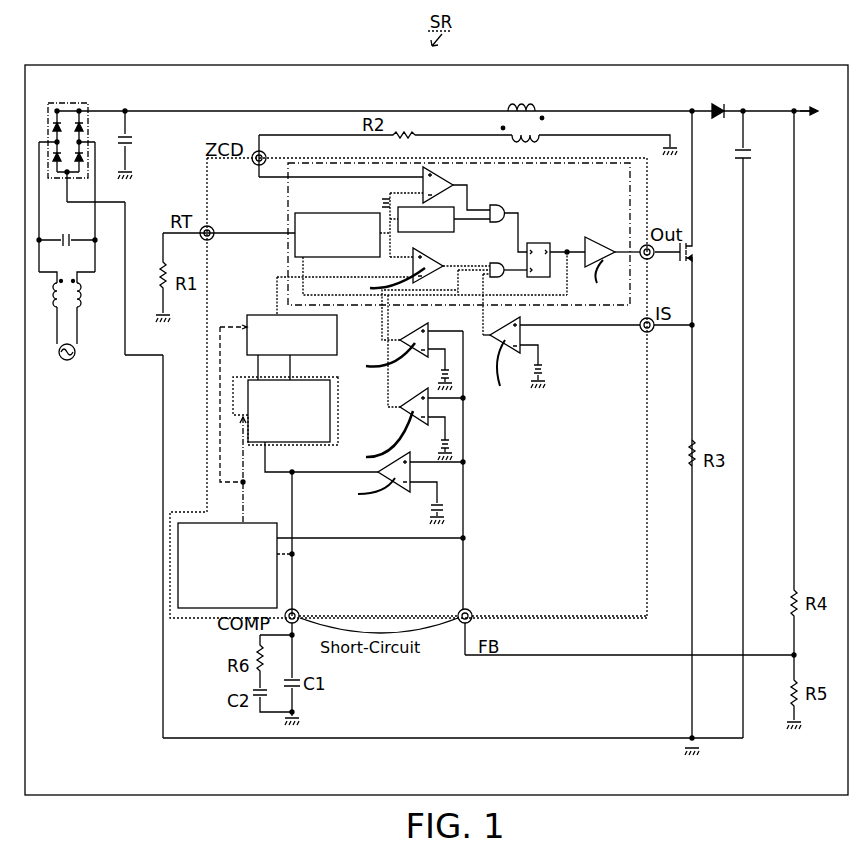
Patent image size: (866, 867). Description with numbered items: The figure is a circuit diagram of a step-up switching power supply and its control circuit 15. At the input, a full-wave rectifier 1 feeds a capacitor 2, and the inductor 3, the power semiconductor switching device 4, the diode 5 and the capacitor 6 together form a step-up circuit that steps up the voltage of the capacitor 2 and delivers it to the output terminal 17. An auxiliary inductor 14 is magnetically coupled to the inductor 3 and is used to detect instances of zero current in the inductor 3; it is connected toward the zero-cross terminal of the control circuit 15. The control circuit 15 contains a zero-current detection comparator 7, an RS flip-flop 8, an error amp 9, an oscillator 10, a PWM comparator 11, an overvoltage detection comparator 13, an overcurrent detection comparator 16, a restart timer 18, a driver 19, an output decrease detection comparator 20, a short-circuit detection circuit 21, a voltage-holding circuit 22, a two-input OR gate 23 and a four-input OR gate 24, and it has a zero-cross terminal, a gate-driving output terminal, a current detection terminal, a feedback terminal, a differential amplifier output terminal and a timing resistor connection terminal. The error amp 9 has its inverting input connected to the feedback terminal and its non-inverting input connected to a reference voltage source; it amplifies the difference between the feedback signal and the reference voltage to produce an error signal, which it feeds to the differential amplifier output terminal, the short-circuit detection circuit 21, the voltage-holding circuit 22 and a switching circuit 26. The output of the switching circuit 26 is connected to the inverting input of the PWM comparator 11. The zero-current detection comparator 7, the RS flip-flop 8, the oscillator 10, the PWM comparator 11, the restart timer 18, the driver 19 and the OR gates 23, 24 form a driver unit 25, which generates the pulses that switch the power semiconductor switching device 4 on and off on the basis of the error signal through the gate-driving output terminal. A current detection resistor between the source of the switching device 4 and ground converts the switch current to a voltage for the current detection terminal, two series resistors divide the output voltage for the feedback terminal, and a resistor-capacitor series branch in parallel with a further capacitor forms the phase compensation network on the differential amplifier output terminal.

The full-wave rectifier 1 is at (62, 104).
The capacitor 2 is at (139, 141).
The inductor 3 is at (516, 105).
The power semiconductor switching device 4 is at (697, 252).
The diode 5 is at (717, 101).
The capacitor 6 is at (752, 150).
The zero-current detection comparator 7 is at (446, 186).
The RS flip-flop 8 is at (540, 243).
The error amp 9 is at (385, 468).
The oscillator 10 is at (333, 213).
The PWM comparator 11 is at (425, 262).
The overvoltage detection comparator 13 is at (403, 337).
The auxiliary inductor 14 is at (532, 141).
The control circuit 15 is at (648, 202).
The overcurrent detection comparator 16 is at (512, 319).
The output terminal 17 is at (812, 106).
The restart timer 18 is at (470, 190).
The driver 19 is at (590, 236).
The output decrease detection comparator 20 is at (401, 403).
The short-circuit detection circuit 21 is at (253, 523).
The voltage-holding circuit 22 is at (260, 380).
The 2-input OR gate 23 is at (507, 211).
The 4-input OR gate 24 is at (500, 262).
The driver unit 25 is at (281, 204).
The switching circuit 26 is at (252, 315).